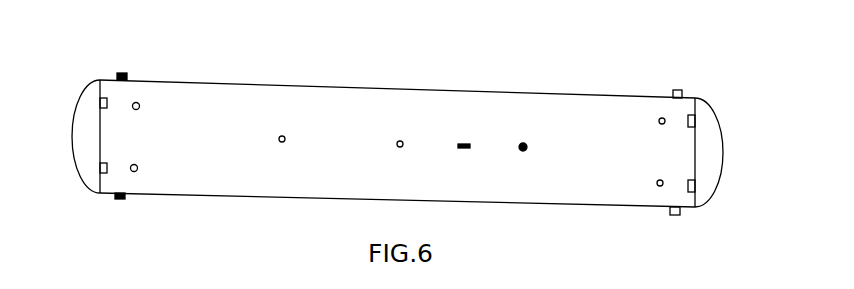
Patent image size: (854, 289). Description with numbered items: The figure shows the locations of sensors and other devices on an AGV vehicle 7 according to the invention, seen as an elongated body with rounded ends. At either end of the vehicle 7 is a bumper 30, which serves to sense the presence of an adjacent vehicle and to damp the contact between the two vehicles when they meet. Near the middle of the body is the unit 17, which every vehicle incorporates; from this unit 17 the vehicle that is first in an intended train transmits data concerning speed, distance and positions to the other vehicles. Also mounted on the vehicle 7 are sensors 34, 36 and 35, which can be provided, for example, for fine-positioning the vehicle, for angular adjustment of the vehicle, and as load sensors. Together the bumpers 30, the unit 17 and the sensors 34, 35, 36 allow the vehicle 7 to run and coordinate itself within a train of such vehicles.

The bumper 30 is at (83, 115).
The vehicle 7 is at (730, 108).
The sensor 34 is at (281, 142).
The sensor 36 is at (402, 141).
The unit 17 is at (464, 144).
The sensor 35 is at (523, 151).